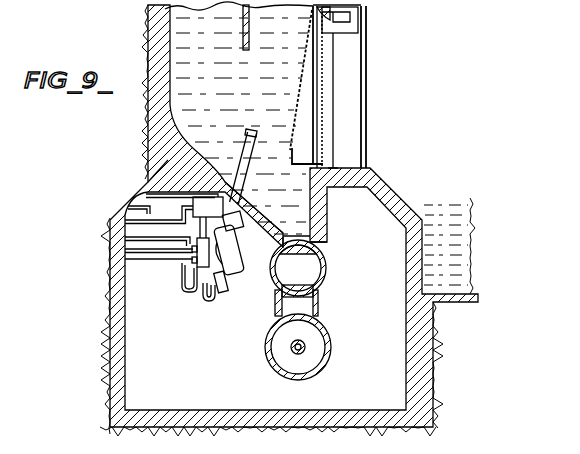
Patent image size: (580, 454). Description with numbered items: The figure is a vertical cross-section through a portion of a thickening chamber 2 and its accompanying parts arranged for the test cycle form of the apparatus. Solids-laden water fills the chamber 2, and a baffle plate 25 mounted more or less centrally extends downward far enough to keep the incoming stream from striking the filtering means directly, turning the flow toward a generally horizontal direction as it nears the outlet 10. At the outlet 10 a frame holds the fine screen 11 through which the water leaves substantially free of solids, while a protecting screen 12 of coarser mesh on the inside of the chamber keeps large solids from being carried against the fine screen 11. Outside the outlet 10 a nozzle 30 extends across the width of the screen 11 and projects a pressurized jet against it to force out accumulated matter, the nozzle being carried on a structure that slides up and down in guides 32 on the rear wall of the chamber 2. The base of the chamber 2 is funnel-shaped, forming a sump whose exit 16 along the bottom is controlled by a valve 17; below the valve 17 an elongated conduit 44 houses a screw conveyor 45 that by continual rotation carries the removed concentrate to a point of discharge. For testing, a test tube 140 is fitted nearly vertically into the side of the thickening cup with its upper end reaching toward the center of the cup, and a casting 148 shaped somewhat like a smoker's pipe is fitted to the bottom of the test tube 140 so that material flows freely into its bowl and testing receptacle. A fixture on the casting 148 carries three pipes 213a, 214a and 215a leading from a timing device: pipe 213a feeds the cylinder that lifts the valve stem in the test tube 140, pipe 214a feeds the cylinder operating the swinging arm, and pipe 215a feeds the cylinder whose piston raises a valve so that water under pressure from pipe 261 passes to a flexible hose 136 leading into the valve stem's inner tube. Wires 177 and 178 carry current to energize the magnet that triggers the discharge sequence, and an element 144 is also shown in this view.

The thickening chamber 2 is at (239, 118).
The baffle plate 25 is at (249, 33).
The outlet 10 is at (334, 49).
The screen 11 is at (328, 87).
The protecting screen 12 is at (306, 109).
The nozzle 30 is at (357, 31).
The guides 32 is at (367, 58).
The test tube 140 is at (251, 131).
The sleeve 144 is at (248, 212).
The casting 148 is at (236, 243).
The flexible hose 136 is at (215, 305).
The wire 177 is at (155, 192).
The wire 178 is at (147, 208).
The pipe 214a is at (123, 222).
The pipe 215a is at (118, 239).
The pipe 213a is at (115, 251).
The pipe 261 is at (152, 260).
The exit 16 is at (323, 243).
The valve 17 is at (323, 263).
The elongated conduit 44 is at (327, 327).
The screw conveyor 45 is at (305, 347).